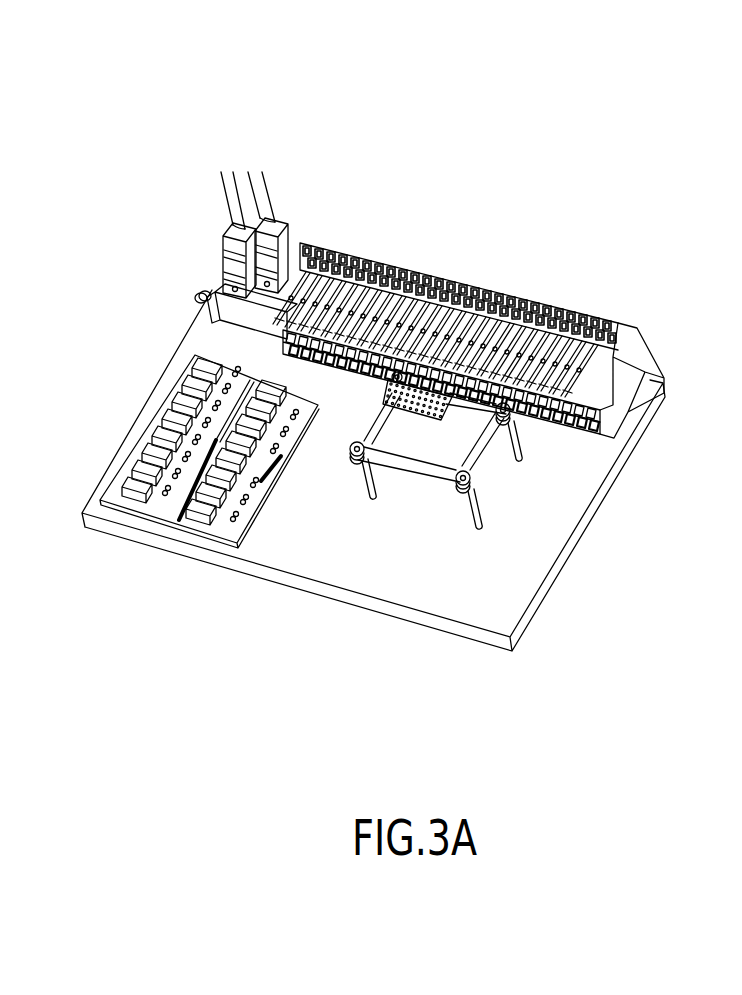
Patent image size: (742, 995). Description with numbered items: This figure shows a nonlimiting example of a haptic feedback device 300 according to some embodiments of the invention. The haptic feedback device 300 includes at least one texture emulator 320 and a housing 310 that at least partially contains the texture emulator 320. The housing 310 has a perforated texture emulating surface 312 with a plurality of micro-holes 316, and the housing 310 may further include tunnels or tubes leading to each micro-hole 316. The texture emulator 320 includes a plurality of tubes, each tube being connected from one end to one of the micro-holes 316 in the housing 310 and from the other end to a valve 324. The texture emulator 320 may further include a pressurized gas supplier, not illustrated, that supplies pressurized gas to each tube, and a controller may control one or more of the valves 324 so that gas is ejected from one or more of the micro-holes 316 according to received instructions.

The haptic feedback device 300 is at (186, 303).
The housing 310 is at (383, 422).
The perforated texture emulating surface 312 is at (571, 313).
The micro-holes 316 is at (430, 283).
The texture emulator 320 is at (490, 455).
The valve 324 is at (645, 377).